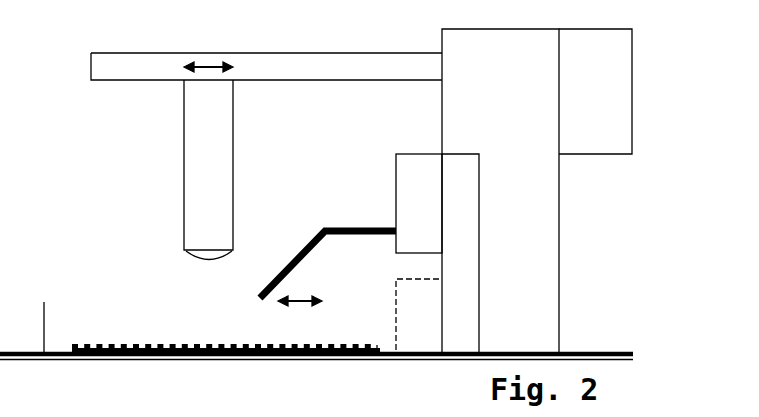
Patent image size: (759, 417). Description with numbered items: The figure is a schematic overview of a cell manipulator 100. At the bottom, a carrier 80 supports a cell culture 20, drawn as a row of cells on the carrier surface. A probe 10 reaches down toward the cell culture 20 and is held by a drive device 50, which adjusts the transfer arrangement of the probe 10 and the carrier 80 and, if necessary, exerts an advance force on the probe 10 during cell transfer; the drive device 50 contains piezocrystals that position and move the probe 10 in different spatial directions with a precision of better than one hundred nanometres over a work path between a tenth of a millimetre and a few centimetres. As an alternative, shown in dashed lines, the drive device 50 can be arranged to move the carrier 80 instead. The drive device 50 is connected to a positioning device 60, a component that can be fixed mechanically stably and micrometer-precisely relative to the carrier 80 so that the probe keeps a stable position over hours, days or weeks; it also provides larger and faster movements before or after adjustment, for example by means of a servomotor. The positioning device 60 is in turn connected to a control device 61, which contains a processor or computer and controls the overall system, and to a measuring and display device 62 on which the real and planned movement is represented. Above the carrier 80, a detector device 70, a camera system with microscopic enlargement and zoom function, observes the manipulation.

The cell manipulator 100 is at (53, 187).
The probe 10 is at (233, 328).
The cell culture 20 is at (187, 348).
The drive device 50 is at (430, 186).
The positioning device 60 is at (477, 186).
The control device 61 is at (548, 60).
The measuring and display device 62 is at (621, 60).
The detector device 70 is at (221, 151).
The carrier 80 is at (88, 330).